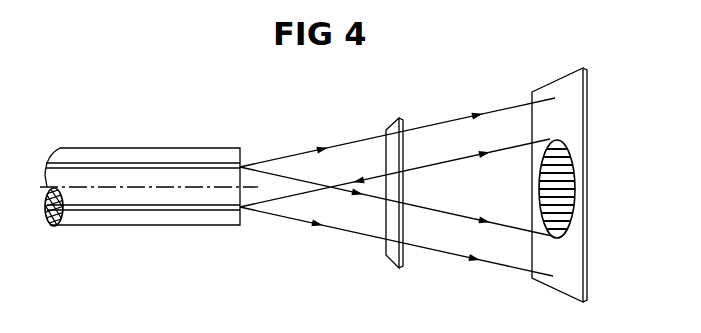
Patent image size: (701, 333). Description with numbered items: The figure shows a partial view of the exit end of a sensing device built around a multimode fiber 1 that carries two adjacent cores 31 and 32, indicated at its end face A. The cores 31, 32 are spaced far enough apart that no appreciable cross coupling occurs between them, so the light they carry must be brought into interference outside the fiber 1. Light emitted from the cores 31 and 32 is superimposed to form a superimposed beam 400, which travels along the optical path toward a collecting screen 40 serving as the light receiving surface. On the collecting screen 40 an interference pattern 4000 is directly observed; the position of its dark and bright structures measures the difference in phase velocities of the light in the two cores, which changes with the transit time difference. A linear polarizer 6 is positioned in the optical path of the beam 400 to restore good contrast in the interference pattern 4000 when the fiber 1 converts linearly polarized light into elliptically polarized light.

The multimode fiber 1 is at (149, 189).
The fiber end face A is at (58, 187).
The core 31 is at (98, 166).
The core 32 is at (171, 210).
The linear polarizer 6 is at (390, 124).
The collecting screen 40 is at (600, 156).
The superimposed beam 400 is at (454, 158).
The interference pattern 4000 is at (565, 190).